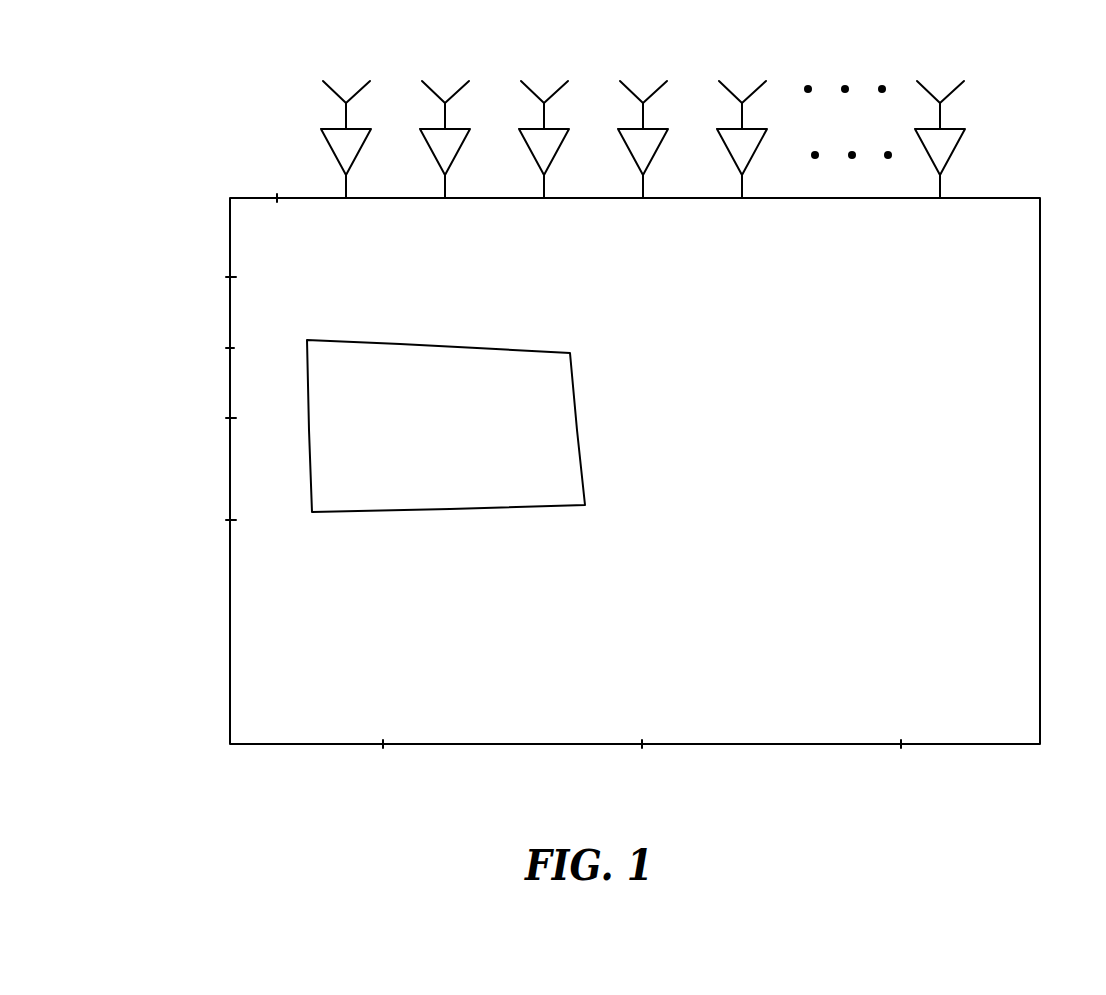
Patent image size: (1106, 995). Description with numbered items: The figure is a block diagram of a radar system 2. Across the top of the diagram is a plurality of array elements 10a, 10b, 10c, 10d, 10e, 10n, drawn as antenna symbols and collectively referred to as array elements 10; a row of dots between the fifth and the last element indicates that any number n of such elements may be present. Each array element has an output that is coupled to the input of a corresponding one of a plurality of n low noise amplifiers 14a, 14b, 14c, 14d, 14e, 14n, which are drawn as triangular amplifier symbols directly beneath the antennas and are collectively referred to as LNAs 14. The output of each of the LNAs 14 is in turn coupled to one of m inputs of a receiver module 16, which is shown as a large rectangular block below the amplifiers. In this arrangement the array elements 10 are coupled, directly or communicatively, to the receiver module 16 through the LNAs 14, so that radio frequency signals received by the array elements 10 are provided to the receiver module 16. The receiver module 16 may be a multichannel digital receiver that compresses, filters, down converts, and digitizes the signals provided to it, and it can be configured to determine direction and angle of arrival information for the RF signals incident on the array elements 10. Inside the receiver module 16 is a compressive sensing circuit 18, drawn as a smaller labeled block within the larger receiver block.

The radar system 2 is at (133, 99).
The array elements 10 is at (327, 66).
The array element 10a is at (343, 98).
The array element 10b is at (442, 98).
The array element 10c is at (541, 98).
The array element 10d is at (640, 98).
The array element 10e is at (739, 98).
The array element 10n is at (944, 98).
The low noise amplifiers 14 is at (325, 120).
The low noise amplifier 14a is at (350, 147).
The low noise amplifier 14b is at (449, 147).
The low noise amplifier 14c is at (548, 147).
The low noise amplifier 14d is at (647, 147).
The low noise amplifier 14e is at (746, 147).
The low noise amplifier 14n is at (944, 147).
The receiver module 16 is at (1040, 233).
The compressive sensing circuit 18 is at (585, 420).